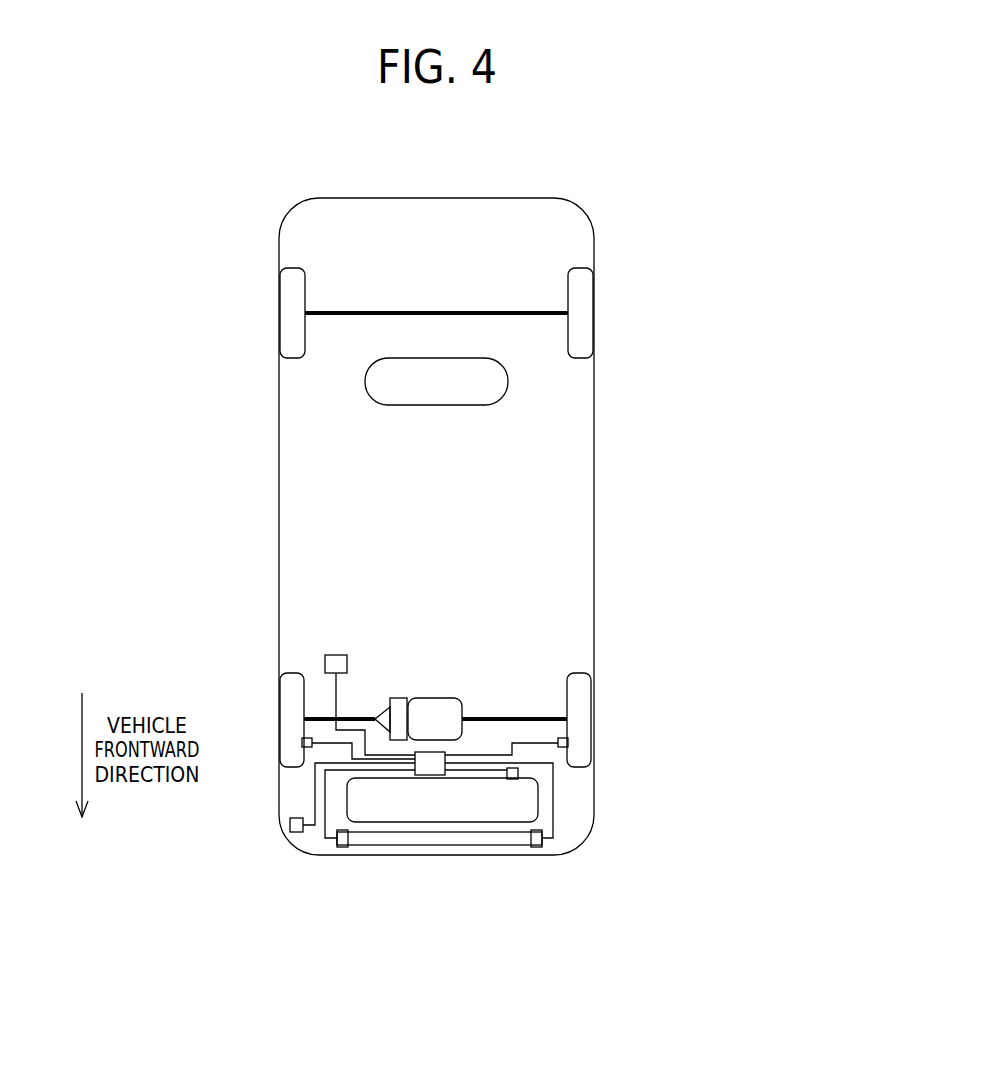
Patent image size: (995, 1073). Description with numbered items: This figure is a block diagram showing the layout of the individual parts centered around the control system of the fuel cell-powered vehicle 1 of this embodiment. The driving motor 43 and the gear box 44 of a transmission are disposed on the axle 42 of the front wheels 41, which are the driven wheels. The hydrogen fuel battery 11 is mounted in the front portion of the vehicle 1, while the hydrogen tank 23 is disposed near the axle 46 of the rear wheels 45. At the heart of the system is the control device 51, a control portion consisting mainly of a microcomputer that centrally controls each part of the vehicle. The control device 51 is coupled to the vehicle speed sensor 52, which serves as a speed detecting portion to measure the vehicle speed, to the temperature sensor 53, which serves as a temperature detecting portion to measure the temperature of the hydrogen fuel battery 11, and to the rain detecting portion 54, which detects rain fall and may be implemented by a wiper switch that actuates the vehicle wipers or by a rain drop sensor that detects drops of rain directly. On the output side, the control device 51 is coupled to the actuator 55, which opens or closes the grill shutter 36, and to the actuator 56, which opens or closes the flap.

The fuel cell-powered vehicle 1 is at (661, 205).
The hydrogen fuel battery 11 is at (525, 803).
The hydrogen tank 23 is at (433, 405).
The grill shutter 36 is at (478, 846).
The front wheels 41 is at (290, 703).
The axle 42 is at (365, 717).
The driving motor 43 is at (438, 698).
The gear box 44 is at (398, 698).
The rear wheels 45 is at (278, 308).
The axle 46 is at (437, 311).
The control device 51 is at (440, 752).
The vehicle speed sensor 52 is at (302, 743).
The temperature sensor 53 is at (518, 773).
The rain detecting portion 54 is at (331, 655).
The actuator 55 is at (342, 848).
The actuator 56 is at (293, 833).